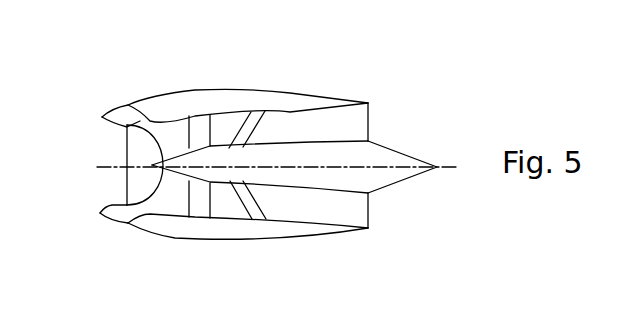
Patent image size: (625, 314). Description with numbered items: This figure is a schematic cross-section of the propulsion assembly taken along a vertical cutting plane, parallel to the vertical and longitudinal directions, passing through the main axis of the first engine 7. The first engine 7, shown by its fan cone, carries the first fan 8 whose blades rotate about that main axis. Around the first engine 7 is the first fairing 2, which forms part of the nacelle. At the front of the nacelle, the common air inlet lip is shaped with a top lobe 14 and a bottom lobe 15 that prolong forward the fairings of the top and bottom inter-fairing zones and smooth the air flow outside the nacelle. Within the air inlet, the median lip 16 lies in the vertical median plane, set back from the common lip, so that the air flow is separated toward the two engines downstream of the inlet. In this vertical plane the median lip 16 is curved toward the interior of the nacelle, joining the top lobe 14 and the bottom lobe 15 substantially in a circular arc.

The first fairing 2 is at (226, 91).
The first engine 7 is at (379, 147).
The first fan 8 is at (184, 239).
The top lobe 14 is at (103, 116).
The bottom lobe 15 is at (101, 211).
The median lip 16 is at (127, 126).